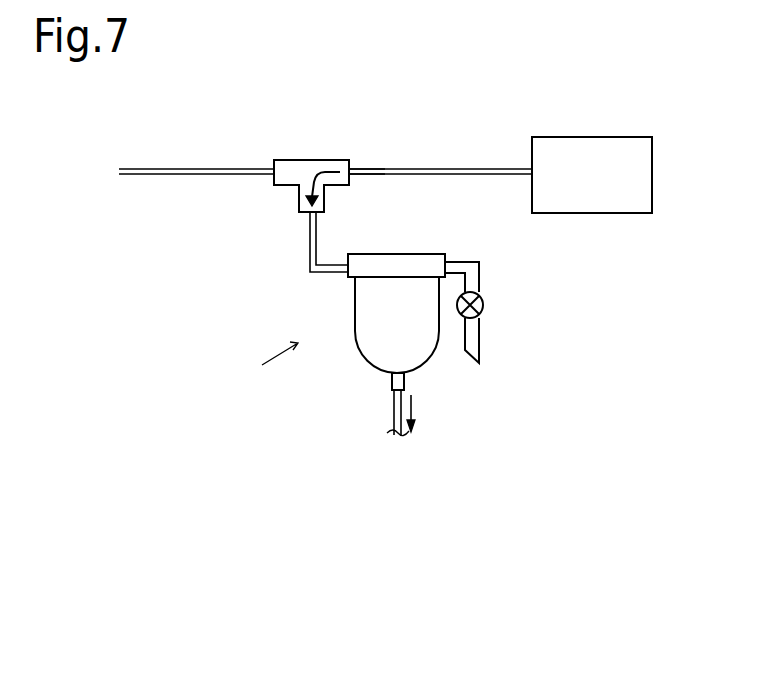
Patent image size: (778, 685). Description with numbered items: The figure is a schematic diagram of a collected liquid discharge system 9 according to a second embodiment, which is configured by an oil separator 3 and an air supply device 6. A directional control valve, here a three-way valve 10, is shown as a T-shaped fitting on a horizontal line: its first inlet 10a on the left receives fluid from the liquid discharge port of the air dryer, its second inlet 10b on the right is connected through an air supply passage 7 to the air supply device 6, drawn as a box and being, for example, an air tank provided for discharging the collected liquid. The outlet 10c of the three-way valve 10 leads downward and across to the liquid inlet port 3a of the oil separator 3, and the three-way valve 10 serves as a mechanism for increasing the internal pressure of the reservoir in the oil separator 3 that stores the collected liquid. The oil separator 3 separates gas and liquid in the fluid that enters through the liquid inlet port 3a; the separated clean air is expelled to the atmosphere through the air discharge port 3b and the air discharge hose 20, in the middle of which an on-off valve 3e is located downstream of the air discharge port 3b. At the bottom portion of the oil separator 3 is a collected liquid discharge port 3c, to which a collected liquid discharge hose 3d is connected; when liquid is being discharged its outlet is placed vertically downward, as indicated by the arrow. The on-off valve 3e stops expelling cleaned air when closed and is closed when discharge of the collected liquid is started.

The oil separator 3 is at (405, 254).
The liquid inlet port 3a is at (348, 276).
The air discharge port 3b is at (446, 258).
The collected liquid discharge port 3c is at (392, 380).
The collected liquid discharge hose 3d is at (394, 415).
The on-off valve 3e is at (484, 308).
The air supply device 6 is at (607, 137).
The air supply passage 7 is at (442, 168).
The collected liquid discharge system 9 is at (270, 365).
The three-way valve 10 is at (307, 160).
The first inlet 10a is at (274, 160).
The second inlet 10b is at (360, 166).
The outlet 10c is at (310, 218).
The air discharge hose 20 is at (480, 270).